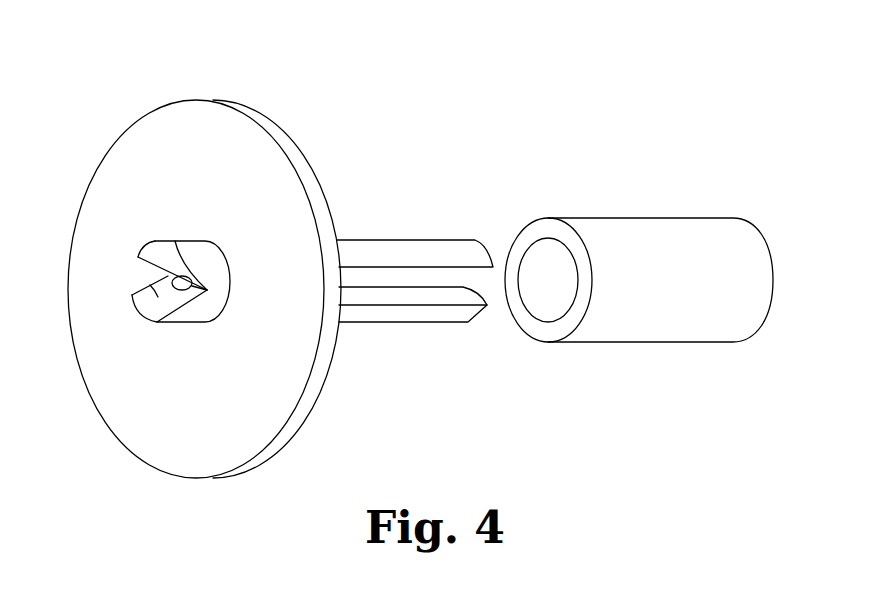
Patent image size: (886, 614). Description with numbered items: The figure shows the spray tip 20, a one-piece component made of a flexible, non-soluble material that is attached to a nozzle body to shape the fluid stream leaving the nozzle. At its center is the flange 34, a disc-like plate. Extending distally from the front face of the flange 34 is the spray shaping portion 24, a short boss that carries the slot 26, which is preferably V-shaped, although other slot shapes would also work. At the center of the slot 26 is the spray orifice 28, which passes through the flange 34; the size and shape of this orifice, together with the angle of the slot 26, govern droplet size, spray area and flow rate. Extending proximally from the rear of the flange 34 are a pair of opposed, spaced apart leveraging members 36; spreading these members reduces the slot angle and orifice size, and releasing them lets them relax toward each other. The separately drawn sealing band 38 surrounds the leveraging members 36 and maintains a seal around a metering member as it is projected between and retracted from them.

The spray tip 20 is at (150, 58).
The spray shaping portion 24 is at (177, 238).
The slot 26 is at (150, 283).
The spray orifice 28 is at (183, 290).
The flange 34 is at (277, 120).
The leveraging members 36 is at (413, 240).
The sealing band 38 is at (540, 327).